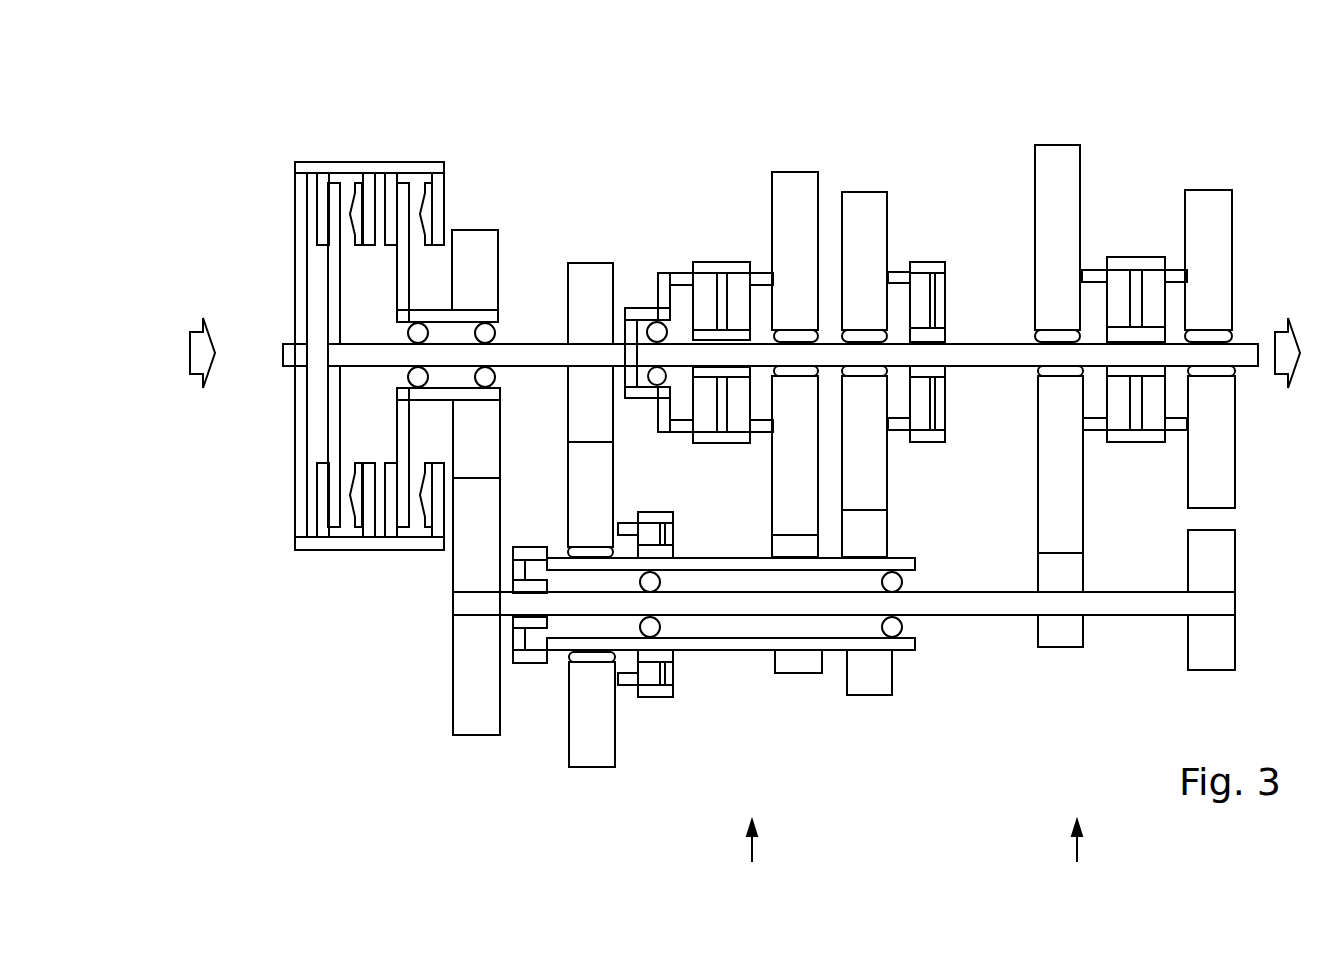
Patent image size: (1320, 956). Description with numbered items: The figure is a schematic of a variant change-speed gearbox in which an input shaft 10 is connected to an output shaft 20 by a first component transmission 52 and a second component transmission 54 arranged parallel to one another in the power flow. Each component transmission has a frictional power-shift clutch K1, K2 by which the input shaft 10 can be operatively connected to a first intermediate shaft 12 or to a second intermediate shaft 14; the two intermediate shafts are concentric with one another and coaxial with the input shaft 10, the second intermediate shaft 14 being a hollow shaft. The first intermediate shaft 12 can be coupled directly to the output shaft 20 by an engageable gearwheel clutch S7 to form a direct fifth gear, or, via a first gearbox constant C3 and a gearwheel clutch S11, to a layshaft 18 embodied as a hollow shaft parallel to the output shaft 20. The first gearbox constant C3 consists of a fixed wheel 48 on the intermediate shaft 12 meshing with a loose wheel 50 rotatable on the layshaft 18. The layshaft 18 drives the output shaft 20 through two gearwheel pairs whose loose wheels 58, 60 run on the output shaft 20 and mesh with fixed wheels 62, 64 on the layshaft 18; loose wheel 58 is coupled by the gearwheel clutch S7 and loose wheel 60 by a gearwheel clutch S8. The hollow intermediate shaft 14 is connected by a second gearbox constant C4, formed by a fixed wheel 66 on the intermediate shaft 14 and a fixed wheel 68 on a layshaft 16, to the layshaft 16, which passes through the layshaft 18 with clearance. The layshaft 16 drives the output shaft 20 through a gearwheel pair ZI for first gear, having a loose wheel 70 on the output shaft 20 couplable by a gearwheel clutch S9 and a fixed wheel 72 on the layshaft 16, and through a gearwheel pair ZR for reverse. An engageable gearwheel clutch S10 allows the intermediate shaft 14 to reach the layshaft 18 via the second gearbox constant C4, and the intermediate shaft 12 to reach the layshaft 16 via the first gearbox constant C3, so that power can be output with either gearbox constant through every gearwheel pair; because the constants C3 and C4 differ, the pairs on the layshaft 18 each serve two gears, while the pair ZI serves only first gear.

The input shaft 10 is at (295, 355).
The first intermediate shaft 12 is at (342, 357).
The second intermediate shaft 14 is at (428, 305).
The layshaft 16 is at (483, 607).
The layshaft 18 is at (778, 647).
The output shaft 20 is at (1237, 348).
The fixed wheel 48 is at (600, 270).
The loose wheel 50 is at (605, 750).
The first component transmission 52 is at (752, 860).
The second component transmission 54 is at (1077, 860).
The loose wheel 58 is at (790, 490).
The loose wheel 60 is at (875, 478).
The fixed wheel 62 is at (805, 660).
The fixed wheel 64 is at (877, 680).
The fixed wheel 66 is at (486, 238).
The fixed wheel 68 is at (463, 712).
The loose wheel 70 is at (1052, 240).
The fixed wheel 72 is at (1063, 635).
The power-shift clutch K1 is at (342, 527).
The power-shift clutch K2 is at (410, 527).
The first gearbox constant C3 is at (588, 246).
The second gearbox constant C4 is at (472, 214).
The gearwheel clutch S7 is at (708, 262).
The gearwheel clutch S8 is at (921, 262).
The gearwheel clutch S9 is at (1128, 257).
The gearwheel clutch S10 is at (525, 658).
The gearwheel clutch S11 is at (660, 692).
The gearwheel pair ZI is at (1053, 124).
The gearwheel pair ZR is at (1210, 172).